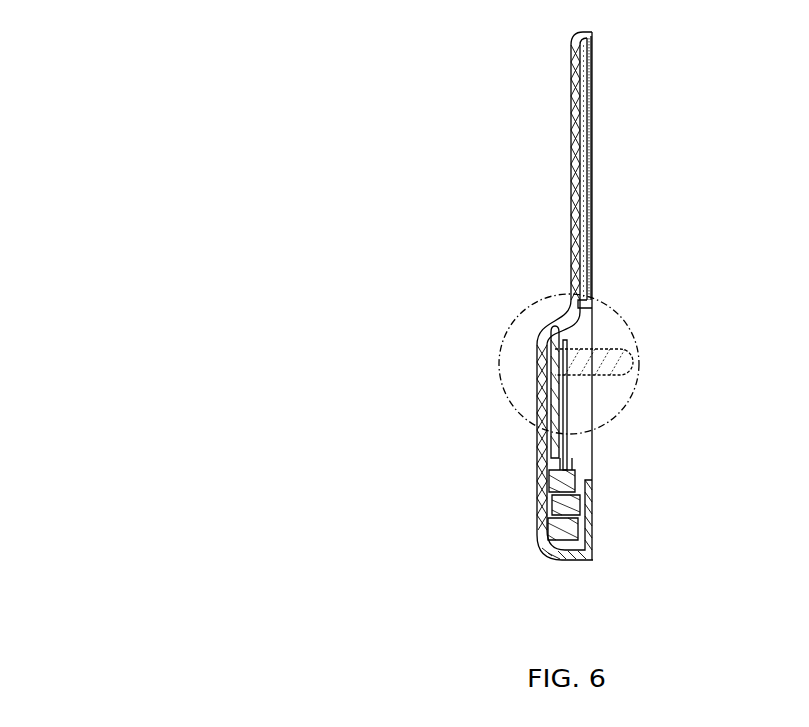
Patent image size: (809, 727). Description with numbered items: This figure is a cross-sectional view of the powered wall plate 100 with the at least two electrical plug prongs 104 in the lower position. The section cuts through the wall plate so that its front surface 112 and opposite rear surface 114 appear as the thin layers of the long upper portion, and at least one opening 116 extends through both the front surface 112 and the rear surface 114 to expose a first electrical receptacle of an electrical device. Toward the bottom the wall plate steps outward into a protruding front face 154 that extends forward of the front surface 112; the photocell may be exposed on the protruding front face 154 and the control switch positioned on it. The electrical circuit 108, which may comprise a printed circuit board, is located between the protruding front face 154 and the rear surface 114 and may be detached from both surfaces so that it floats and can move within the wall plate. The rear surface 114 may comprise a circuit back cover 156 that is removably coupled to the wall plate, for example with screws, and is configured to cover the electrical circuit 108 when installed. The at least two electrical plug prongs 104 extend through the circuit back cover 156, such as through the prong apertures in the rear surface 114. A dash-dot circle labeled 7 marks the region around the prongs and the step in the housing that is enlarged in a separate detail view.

The powered wall plate 100 is at (298, 186).
The front surface 112 is at (573, 94).
The rear surface 114 is at (582, 111).
The opening 116 is at (571, 203).
The electrical plug prongs 104 is at (605, 365).
The detail view indicator 7 is at (633, 389).
The protruding front face 154 is at (538, 472).
The circuit back cover 156 is at (568, 449).
The electrical circuit 108 is at (556, 460).